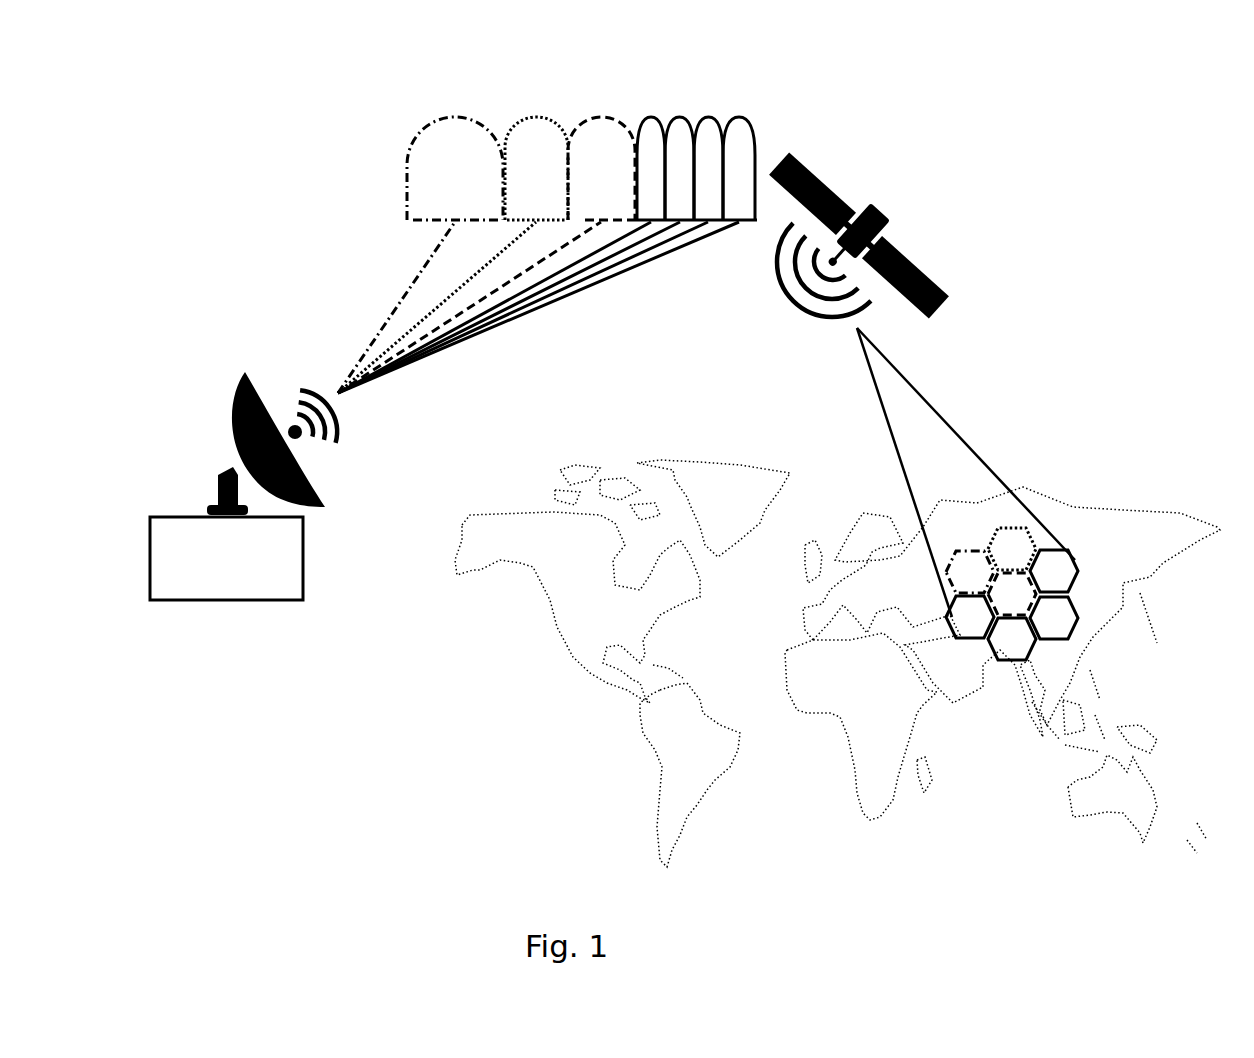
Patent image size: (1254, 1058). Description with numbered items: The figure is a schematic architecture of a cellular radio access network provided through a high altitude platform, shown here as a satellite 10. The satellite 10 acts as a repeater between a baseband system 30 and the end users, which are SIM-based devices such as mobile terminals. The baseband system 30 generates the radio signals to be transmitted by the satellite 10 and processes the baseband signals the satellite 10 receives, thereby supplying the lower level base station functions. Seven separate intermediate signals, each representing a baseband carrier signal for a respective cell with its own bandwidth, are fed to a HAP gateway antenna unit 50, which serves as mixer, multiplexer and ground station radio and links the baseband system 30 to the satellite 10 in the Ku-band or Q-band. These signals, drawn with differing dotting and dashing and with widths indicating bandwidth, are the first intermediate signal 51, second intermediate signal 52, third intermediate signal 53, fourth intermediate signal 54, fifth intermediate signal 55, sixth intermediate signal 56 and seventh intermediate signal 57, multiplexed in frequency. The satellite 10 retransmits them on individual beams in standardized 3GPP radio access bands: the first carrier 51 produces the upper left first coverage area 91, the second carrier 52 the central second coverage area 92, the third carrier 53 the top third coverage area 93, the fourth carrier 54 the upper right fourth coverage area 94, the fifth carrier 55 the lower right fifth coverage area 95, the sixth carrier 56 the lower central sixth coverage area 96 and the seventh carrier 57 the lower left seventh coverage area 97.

The satellite (HAP) 10 is at (897, 210).
The baseband system 30 is at (226, 558).
The HAP gateway antenna unit 50 is at (212, 432).
The first intermediate signal 51 is at (420, 237).
The second intermediate signal 52 is at (453, 237).
The third intermediate signal 53 is at (486, 237).
The fourth intermediate signal 54 is at (547, 237).
The fifth intermediate signal 55 is at (680, 114).
The sixth intermediate signal 56 is at (533, 237).
The seventh intermediate signal 57 is at (738, 114).
The first coverage area 91 is at (976, 552).
The second coverage area 92 is at (1020, 568).
The third coverage area 93 is at (1018, 528).
The fourth coverage area 94 is at (1078, 558).
The fifth coverage area 95 is at (1077, 637).
The sixth coverage area 96 is at (1017, 667).
The seventh coverage area 97 is at (973, 645).